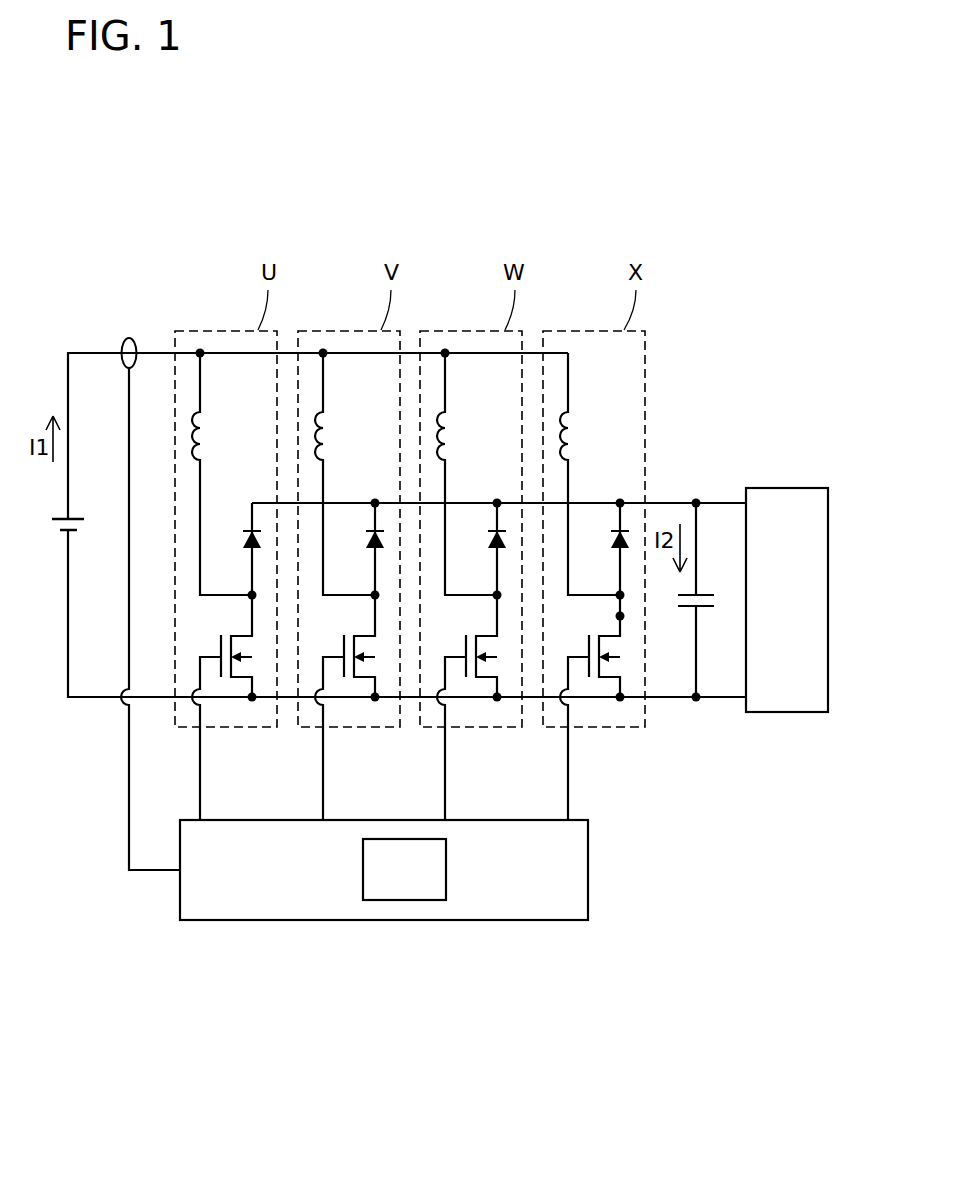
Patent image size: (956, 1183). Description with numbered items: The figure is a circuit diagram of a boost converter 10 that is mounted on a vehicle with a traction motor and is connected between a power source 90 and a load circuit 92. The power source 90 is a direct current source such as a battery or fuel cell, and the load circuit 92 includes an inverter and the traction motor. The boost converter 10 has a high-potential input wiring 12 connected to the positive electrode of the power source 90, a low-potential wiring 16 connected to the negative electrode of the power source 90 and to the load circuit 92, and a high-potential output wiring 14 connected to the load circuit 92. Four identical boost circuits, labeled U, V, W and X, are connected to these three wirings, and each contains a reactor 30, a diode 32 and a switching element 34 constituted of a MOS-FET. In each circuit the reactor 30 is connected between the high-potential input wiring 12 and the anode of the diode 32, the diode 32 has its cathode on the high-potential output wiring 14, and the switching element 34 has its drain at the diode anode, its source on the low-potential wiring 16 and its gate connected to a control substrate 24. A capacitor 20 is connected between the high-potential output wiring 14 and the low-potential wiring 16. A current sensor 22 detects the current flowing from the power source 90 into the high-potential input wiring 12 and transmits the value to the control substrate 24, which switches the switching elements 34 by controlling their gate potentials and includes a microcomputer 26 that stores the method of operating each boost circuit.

The boost converter 10 is at (104, 206).
The high-potential input wiring 12 is at (88, 345).
The high-potential output wiring 14 is at (665, 500).
The low-potential wiring 16 is at (88, 702).
The capacitor 20 is at (705, 593).
The current sensor 22 is at (129, 338).
The control substrate 24 is at (300, 923).
The microcomputer 26 is at (405, 903).
The reactor 30 is at (400, 427).
The diode 32 is at (427, 495).
The switching element 34 is at (420, 707).
The power source 90 is at (78, 517).
The load circuit 92 is at (788, 488).